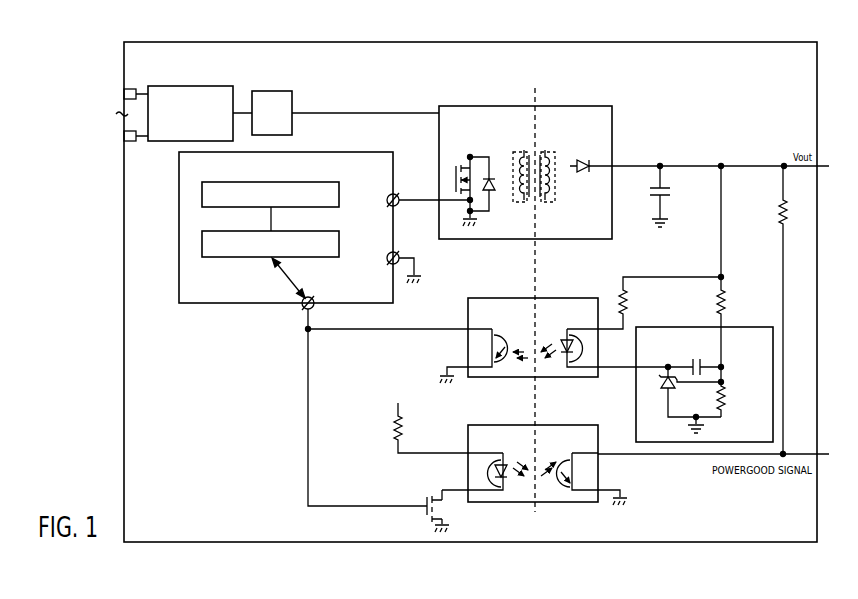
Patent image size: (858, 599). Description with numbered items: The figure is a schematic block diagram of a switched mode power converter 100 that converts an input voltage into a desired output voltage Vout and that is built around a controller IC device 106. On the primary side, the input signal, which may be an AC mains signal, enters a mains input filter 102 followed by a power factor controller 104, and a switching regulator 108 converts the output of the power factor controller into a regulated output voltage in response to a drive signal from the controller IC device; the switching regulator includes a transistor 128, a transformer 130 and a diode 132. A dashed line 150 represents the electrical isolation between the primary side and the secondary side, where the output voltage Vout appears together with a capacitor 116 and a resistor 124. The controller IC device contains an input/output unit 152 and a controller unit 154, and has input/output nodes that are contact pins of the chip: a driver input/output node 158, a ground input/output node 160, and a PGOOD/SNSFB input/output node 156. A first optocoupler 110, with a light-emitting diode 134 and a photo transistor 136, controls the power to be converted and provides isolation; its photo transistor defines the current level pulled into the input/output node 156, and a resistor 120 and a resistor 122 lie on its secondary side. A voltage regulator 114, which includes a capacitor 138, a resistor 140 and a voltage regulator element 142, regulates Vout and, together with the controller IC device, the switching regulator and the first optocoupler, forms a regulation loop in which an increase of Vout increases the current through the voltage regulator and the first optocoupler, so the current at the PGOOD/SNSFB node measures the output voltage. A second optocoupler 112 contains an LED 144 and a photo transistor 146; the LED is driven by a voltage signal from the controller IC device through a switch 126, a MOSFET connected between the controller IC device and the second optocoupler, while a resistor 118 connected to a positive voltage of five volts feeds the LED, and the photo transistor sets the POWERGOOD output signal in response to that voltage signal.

The switched mode power converter 100 is at (124, 286).
The mains input filter 102 is at (206, 86).
The power factor controller (PFC) 104 is at (278, 91).
The controller IC device 106 is at (340, 152).
The switching regulator 108 is at (612, 132).
The first optocoupler 110 is at (557, 298).
The second optocoupler 112 is at (468, 432).
The voltage regulator 114 is at (745, 327).
The capacitor 116 is at (670, 196).
The resistor 118 is at (394, 432).
The resistor 120 is at (628, 302).
The resistor 122 is at (716, 306).
The resistor 124 is at (779, 208).
The switch 126 is at (426, 512).
The transistor 128 is at (457, 166).
The transformer 130 is at (556, 194).
The diode 132 is at (584, 177).
The light-emitting diode (LED) 134 is at (580, 367).
The photo transistor 136 is at (504, 366).
The capacitor 138 is at (704, 371).
The resistor 140 is at (727, 402).
The voltage regulator 142 is at (660, 394).
The LED 144 is at (492, 490).
The photo transistor 146 is at (566, 490).
The dashed line 150 is at (540, 97).
The input/output unit 152 is at (202, 247).
The controller unit 154 is at (202, 194).
The input/output node 156 is at (316, 308).
The input/output node 158 is at (399, 192).
The input/output node 160 is at (398, 254).